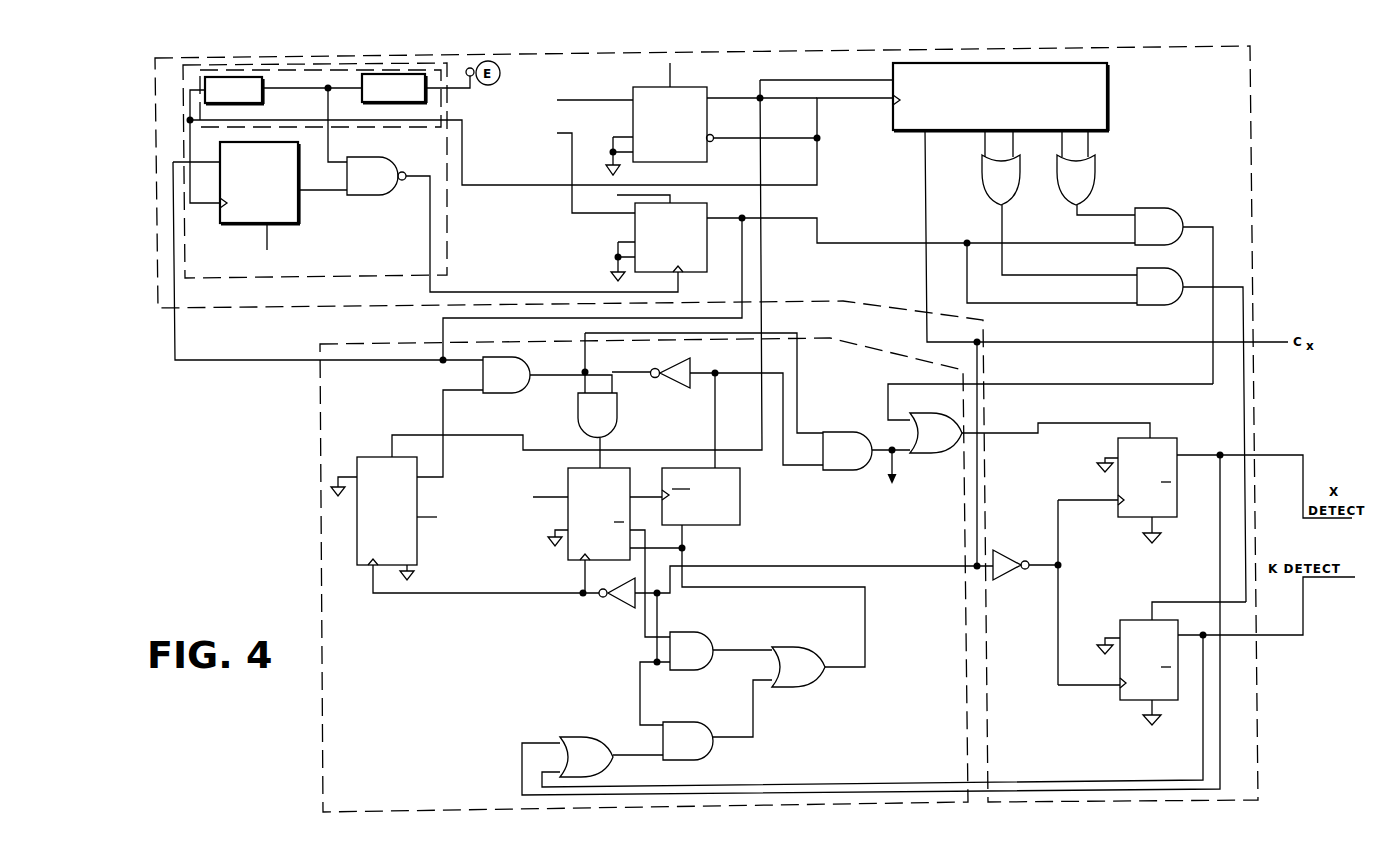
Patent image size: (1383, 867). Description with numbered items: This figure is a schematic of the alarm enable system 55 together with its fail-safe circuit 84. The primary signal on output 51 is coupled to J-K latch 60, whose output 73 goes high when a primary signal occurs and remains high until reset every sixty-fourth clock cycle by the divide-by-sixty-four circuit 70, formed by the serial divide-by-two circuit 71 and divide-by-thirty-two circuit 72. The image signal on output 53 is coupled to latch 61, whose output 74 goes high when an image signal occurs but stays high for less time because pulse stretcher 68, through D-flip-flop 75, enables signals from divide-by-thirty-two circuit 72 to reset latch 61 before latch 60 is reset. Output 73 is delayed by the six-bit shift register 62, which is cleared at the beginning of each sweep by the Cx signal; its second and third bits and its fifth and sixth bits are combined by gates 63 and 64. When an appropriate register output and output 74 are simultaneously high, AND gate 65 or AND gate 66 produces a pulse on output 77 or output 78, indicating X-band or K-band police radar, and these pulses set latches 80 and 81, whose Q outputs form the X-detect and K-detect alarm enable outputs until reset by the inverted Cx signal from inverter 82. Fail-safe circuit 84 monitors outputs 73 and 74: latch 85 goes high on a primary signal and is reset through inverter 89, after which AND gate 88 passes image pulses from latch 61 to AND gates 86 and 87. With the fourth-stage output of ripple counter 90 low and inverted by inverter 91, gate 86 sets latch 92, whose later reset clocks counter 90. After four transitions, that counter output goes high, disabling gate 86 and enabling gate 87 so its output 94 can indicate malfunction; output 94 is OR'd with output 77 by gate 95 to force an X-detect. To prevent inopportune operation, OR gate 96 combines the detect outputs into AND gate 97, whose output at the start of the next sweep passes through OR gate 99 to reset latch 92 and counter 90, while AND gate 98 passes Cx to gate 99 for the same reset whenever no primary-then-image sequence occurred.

The output of gate 50 51 is at (580, 100).
The output of gate 52 53 is at (556, 133).
The alarm enable system 55 is at (1251, 88).
The J-K flip-flop latch 60 is at (695, 86).
The J-K flip-flop latch 61 is at (707, 214).
The 6-bit shift register 62 is at (1108, 83).
The logic gate 63 is at (998, 183).
The logic gate 64 is at (1088, 173).
The AND gate 65 is at (1174, 200).
The AND gate 66 is at (1170, 300).
The pulse stretcher 68 is at (449, 220).
The divide-by-64 circuit 70 is at (418, 132).
The divide-by-2 circuit 71 is at (262, 102).
The divide-by-32 circuit 72 is at (443, 102).
The output of latch 60 73 is at (775, 80).
The output of latch 61 74 is at (782, 218).
The D-flip-flop latch 75 is at (298, 215).
The output of gate 65 77 is at (1200, 224).
The output of gate 66 78 is at (1233, 285).
The latch 80 is at (1178, 503).
The latch 81 is at (1120, 700).
The inverter 82 is at (1007, 580).
The fail-safe circuit 84 is at (322, 707).
The J-K flip-flop latch 85 is at (418, 552).
The AND gate 86 is at (618, 412).
The AND gate 87 is at (833, 475).
The AND gate 88 is at (503, 392).
The inverter 89 is at (623, 600).
The ripple counter 90 is at (740, 513).
The inverter 91 is at (690, 362).
The J-K flip-flop latch 92 is at (567, 553).
The output of gate 87 94 is at (883, 468).
The OR gate 95 is at (937, 457).
The OR gate 96 is at (607, 710).
The AND gate 97 is at (690, 735).
The AND gate 98 is at (693, 645).
The OR gate 99 is at (805, 673).